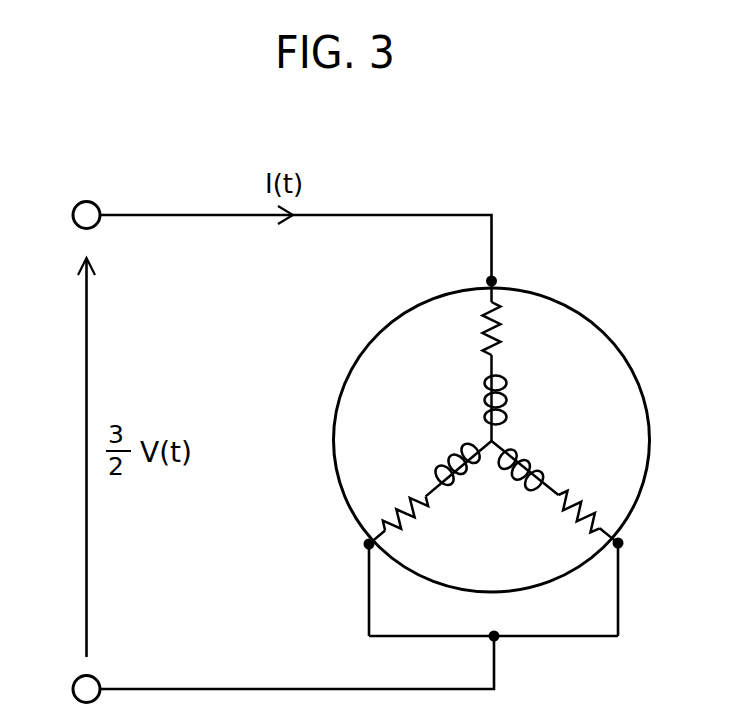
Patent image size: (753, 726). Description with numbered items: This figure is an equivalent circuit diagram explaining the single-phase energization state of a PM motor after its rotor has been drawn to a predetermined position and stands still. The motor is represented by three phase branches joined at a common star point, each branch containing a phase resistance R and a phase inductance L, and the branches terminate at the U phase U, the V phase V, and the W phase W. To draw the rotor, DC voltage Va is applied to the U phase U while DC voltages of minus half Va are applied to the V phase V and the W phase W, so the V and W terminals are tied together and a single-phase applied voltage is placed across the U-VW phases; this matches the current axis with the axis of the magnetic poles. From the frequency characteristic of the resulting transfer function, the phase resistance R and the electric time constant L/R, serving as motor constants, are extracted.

The U phase U is at (512, 267).
The V phase V is at (350, 533).
The W phase W is at (638, 536).
The phase resistance R is at (493, 419).
The phase inductance L is at (489, 434).